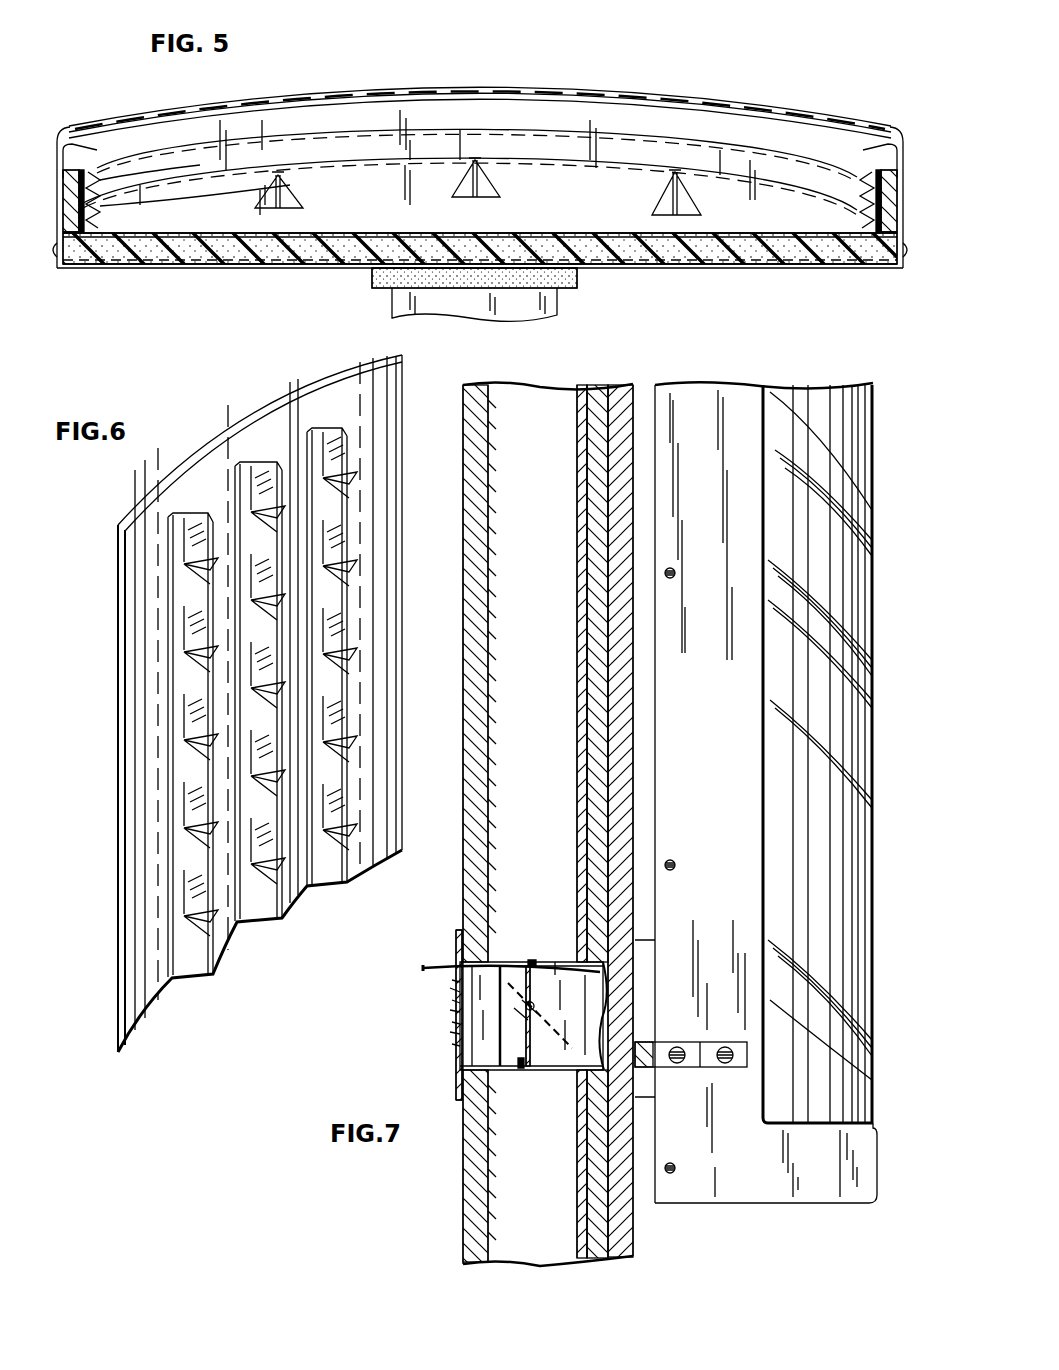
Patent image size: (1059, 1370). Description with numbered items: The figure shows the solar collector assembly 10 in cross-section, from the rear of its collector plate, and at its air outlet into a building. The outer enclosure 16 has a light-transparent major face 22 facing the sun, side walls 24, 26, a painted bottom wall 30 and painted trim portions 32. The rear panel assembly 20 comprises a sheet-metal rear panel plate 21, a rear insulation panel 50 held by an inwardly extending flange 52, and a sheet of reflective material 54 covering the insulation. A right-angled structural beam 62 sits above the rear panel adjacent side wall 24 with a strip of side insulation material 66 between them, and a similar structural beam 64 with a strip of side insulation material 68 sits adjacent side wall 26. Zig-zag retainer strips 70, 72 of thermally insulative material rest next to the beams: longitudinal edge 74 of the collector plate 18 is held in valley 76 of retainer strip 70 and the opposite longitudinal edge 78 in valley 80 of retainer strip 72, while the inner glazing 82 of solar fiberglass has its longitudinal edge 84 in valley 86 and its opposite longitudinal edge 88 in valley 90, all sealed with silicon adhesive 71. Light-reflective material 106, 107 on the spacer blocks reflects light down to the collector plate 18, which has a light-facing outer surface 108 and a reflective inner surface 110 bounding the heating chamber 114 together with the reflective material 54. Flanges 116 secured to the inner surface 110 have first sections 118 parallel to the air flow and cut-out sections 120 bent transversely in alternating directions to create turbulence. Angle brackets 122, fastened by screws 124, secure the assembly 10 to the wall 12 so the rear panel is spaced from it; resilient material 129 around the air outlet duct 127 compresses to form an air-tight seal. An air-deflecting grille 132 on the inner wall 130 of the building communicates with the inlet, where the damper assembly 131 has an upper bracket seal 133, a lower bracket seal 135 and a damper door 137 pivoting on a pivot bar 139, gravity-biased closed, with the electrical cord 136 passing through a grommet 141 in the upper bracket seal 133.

In FIG. 5, the solar collector assembly 10 is at (134, 92).
In FIG. 7, the solar collector assembly 10 is at (760, 1246).
In FIG. 5, the wall 12 is at (474, 304).
In FIG. 7, the wall 12 is at (645, 1234).
In FIG. 5, the outer enclosure 16 is at (527, 85).
In FIG. 7, the outer enclosure 16 is at (844, 1212).
In FIG. 5, the collector plate 18 is at (583, 174).
In FIG. 6, the collector plate 18 is at (212, 418).
In FIG. 5, the rear panel assembly 20 is at (237, 275).
In FIG. 5, the rear panel plate 21 is at (692, 270).
In FIG. 5, the major face 22 is at (570, 100).
In FIG. 5, the side wall 24 is at (900, 142).
In FIG. 5, the side wall 26 is at (60, 138).
In FIG. 7, the side wall 26 is at (820, 990).
In FIG. 7, the bottom wall 30 is at (793, 1204).
In FIG. 5, the trim portions 32 is at (57, 264).
In FIG. 7, the trim portions 32 is at (700, 408).
In FIG. 5, the rear insulation panel 50 is at (752, 264).
In FIG. 5, the flange 52 is at (86, 235).
In FIG. 5, the sheet of reflective material 54 is at (766, 212).
In FIG. 5, the structural beam 62 is at (878, 175).
In FIG. 5, the structural beam 64 is at (80, 172).
In FIG. 5, the strip of side insulation material 66 is at (856, 218).
In FIG. 5, the strip of side insulation material 68 is at (104, 217).
In FIG. 5, the retainer strip 70 is at (830, 260).
In FIG. 5, the silicon adhesive 71 is at (98, 175).
In FIG. 5, the retainer strip 72 is at (111, 242).
In FIG. 5, the longitudinal edge 74 is at (840, 185).
In FIG. 6, the longitudinal edge 74 is at (407, 378).
In FIG. 5, the valley 76 is at (845, 208).
In FIG. 5, the longitudinal edge 78 is at (160, 178).
In FIG. 6, the longitudinal edge 78 is at (118, 577).
In FIG. 5, the valley 80 is at (156, 203).
In FIG. 5, the inner glazing 82 is at (671, 138).
In FIG. 5, the longitudinal edge 84 is at (850, 182).
In FIG. 5, the valley 86 is at (858, 180).
In FIG. 5, the longitudinal edge 88 is at (100, 186).
In FIG. 5, the valley 90 is at (100, 178).
In FIG. 5, the light-reflective material 106 is at (378, 110).
In FIG. 5, the light-reflective material 107 is at (470, 172).
In FIG. 5, the outer surface 108 is at (360, 140).
In FIG. 5, the inner surface 110 is at (358, 168).
In FIG. 6, the inner surface 110 is at (290, 395).
In FIG. 5, the heating chamber 114 is at (418, 210).
In FIG. 6, the flange 116 is at (185, 513).
In FIG. 6, the first section 118 is at (348, 458).
In FIG. 5, the cut-out section 120 is at (292, 198).
In FIG. 6, the cut-out section 120 is at (358, 471).
In FIG. 7, the angle bracket 122 is at (698, 1068).
In FIG. 7, the screw 124 is at (720, 1046).
In FIG. 7, the air outlet duct 127 is at (556, 1072).
In FIG. 5, the resilient material 129 is at (577, 281).
In FIG. 7, the resilient material 129 is at (648, 985).
In FIG. 7, the inner wall 130 is at (490, 885).
In FIG. 7, the damper assembly 131 is at (487, 1052).
In FIG. 7, the air-deflecting grille 132 is at (452, 1027).
In FIG. 7, the upper bracket seal 133 is at (556, 962).
In FIG. 7, the lower bracket seal 135 is at (520, 1072).
In FIG. 7, the electrical cord 136 is at (578, 978).
In FIG. 7, the damper door 137 is at (536, 1032).
In FIG. 7, the pivot bar 139 is at (527, 1012).
In FIG. 7, the grommet 141 is at (528, 960).